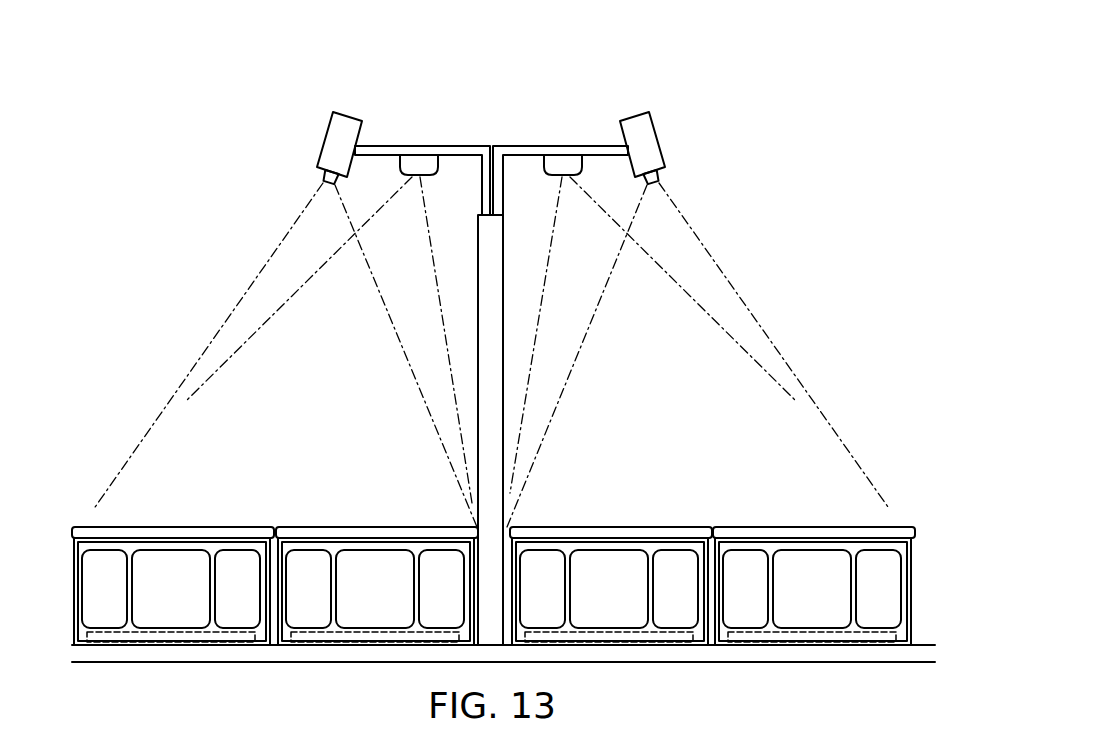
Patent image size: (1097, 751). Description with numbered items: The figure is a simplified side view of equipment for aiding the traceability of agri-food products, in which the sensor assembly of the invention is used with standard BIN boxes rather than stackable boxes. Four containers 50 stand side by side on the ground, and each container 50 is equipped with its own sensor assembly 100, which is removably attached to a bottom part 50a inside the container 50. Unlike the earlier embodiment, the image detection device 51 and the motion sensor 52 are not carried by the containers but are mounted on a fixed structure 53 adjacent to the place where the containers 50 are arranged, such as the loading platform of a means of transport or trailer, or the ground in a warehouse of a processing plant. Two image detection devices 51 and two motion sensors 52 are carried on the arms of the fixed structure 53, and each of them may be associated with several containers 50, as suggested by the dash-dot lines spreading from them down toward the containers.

The container 50 is at (238, 523).
The bottom part 50a is at (193, 635).
The image detection device 51 is at (333, 130).
The motion sensor 52 is at (418, 165).
The fixed structure 53 is at (472, 145).
The sensor assembly 100 is at (163, 628).